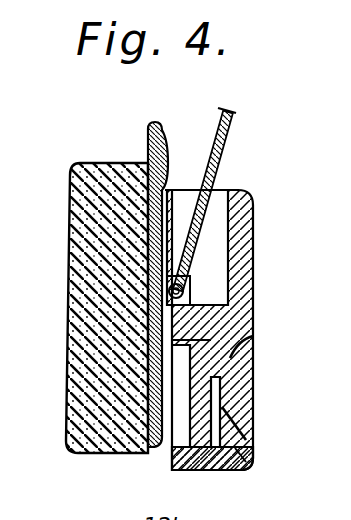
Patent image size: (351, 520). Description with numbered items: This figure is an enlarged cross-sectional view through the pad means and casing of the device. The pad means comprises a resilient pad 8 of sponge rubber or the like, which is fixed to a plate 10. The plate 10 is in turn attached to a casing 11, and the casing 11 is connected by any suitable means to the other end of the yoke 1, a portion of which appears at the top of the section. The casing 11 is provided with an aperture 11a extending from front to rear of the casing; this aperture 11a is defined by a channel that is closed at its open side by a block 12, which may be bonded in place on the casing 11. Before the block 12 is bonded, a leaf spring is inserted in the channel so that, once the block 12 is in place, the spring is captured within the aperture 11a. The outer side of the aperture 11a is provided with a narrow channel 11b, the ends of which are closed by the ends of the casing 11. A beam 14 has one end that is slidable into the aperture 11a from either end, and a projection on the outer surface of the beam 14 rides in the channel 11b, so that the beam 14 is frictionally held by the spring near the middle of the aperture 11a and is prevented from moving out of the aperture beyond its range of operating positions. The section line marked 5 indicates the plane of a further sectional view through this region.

The yoke 1 is at (226, 143).
The section line 5- 5 is at (188, 412).
The resilient pad 8 is at (70, 306).
The plate 10 is at (166, 144).
The casing 11 is at (253, 252).
The aperture 11a is at (256, 335).
The narrow channel 11b is at (240, 416).
The block 12 is at (200, 466).
The beam 14 is at (234, 460).